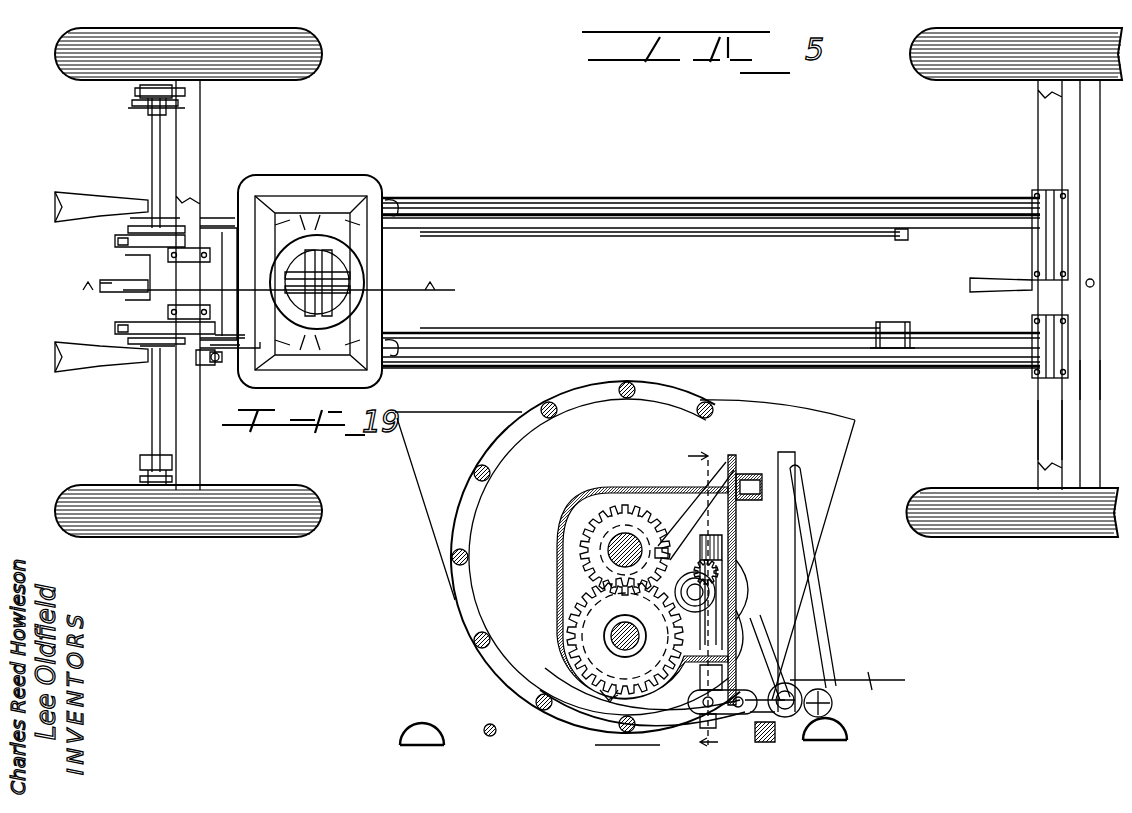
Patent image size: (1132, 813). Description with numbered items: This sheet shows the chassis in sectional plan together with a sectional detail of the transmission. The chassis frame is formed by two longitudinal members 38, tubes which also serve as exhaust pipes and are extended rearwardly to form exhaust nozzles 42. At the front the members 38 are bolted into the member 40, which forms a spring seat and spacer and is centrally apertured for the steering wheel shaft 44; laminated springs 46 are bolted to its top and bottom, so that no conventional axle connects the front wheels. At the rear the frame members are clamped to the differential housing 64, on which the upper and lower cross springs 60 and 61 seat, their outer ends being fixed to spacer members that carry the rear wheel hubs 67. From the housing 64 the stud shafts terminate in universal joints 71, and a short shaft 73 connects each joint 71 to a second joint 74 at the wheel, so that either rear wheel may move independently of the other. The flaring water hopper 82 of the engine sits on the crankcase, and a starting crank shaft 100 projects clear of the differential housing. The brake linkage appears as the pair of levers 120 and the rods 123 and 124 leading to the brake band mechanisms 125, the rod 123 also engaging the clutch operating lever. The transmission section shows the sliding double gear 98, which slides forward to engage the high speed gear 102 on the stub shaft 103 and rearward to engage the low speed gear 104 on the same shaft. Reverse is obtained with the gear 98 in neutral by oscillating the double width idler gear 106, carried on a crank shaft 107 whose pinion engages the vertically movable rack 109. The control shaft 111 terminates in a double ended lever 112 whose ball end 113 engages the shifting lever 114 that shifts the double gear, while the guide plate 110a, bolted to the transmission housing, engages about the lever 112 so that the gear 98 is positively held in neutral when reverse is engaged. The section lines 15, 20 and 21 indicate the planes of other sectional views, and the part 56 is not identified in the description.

In FIG. 5, the section line 15- 15 is at (274, 299).
In FIG. 5, the longitudinal members 38 is at (570, 210).
In FIG. 5, the front axle spacing member 40 is at (1035, 240).
In FIG. 5, the exhaust nozzles 42 is at (62, 375).
In FIG. 5, the steering wheel shaft 44 is at (1012, 290).
In FIG. 5, the laminated springs 46 is at (1052, 406).
In FIG. 5, the rear frame member 56 is at (1096, 380).
In FIG. 5, the upper cross spring 60 is at (195, 150).
In FIG. 5, the lower cross spring 61 is at (178, 470).
In FIG. 5, the differential housing 64 is at (142, 263).
In FIG. 5, the rear wheel hubs 67 is at (147, 84).
In FIG. 5, the universal joints 71 is at (150, 206).
In FIG. 5, the short shaft 73 is at (155, 165).
In FIG. 5, the second joint 74 is at (140, 102).
In FIG. 5, the water hopper 82 is at (380, 192).
In FIG. 5, the starting crank shaft 100 is at (100, 285).
In FIG. 5, the shaft 111 is at (912, 345).
In FIG. 5, the ball end 113 is at (212, 362).
In FIG. 19, the ball end 113 is at (828, 698).
In FIG. 5, the levers 120 is at (142, 240).
In FIG. 5, the rod 123 is at (805, 337).
In FIG. 5, the rod 124 is at (858, 232).
In FIG. 5, the brake band mechanisms 125 is at (142, 336).
In FIG. 19, the section line 20- 20 is at (759, 716).
In FIG. 19, the section line 21- 21 is at (689, 599).
In FIG. 19, the sliding double gear 98 is at (595, 557).
In FIG. 19, the high speed gear 102 is at (560, 648).
In FIG. 19, the stub shaft 103 is at (608, 652).
In FIG. 19, the low speed gear 104 is at (580, 620).
In FIG. 19, the double width idler gear 106 is at (718, 574).
In FIG. 19, the crank shaft 107 is at (720, 598).
In FIG. 19, the rack 109 is at (700, 688).
In FIG. 19, the guide plate 110a is at (735, 730).
In FIG. 19, the double ended lever 112 is at (783, 718).
In FIG. 19, the shifting lever 114 is at (815, 660).